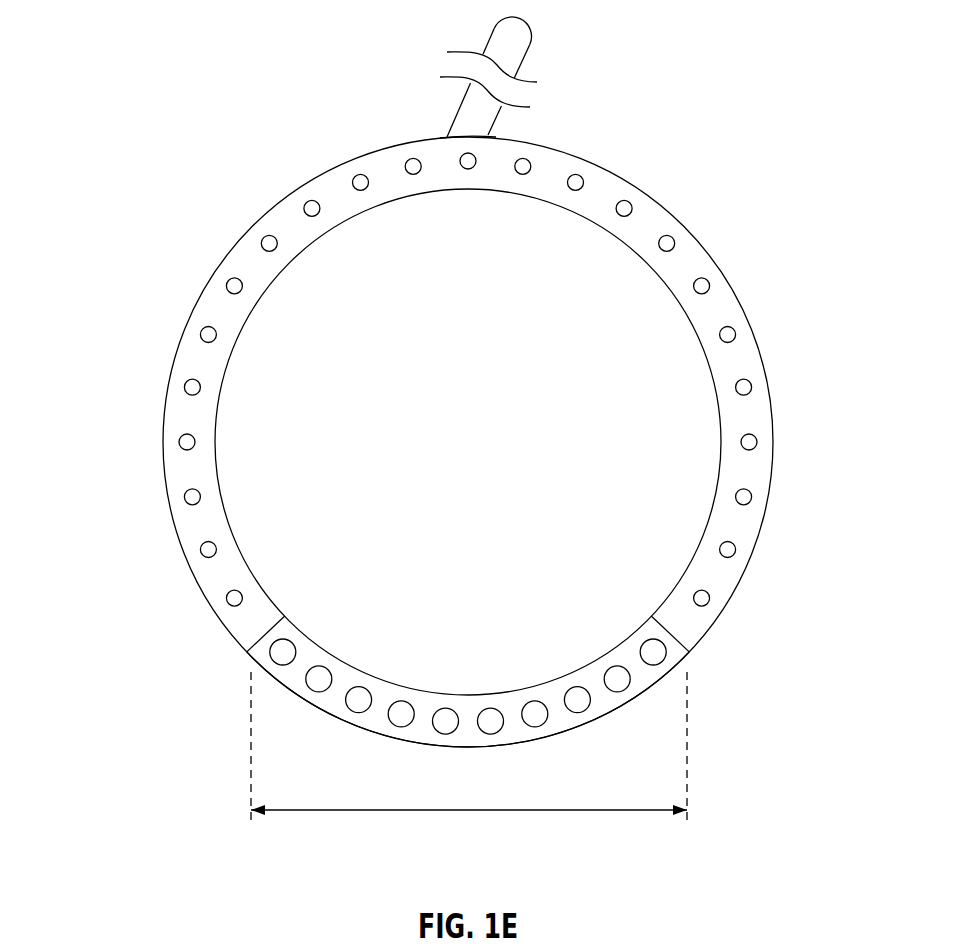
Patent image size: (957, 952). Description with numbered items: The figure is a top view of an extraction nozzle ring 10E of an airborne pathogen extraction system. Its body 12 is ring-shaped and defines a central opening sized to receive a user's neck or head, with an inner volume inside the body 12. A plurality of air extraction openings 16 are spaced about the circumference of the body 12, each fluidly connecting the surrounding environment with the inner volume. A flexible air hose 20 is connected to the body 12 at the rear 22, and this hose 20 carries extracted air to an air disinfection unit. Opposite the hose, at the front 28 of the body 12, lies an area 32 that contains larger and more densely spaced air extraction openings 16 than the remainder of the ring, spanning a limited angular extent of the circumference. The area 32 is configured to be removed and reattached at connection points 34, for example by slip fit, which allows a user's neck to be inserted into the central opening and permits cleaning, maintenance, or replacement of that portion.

The extraction nozzle ring 10E is at (160, 63).
The body 12 is at (165, 440).
The air extraction openings 16 is at (733, 337).
The air hose 20 is at (528, 48).
The rear 22 is at (421, 128).
The front 28 is at (578, 738).
The area 32 is at (470, 811).
The connection points 34 is at (246, 643).